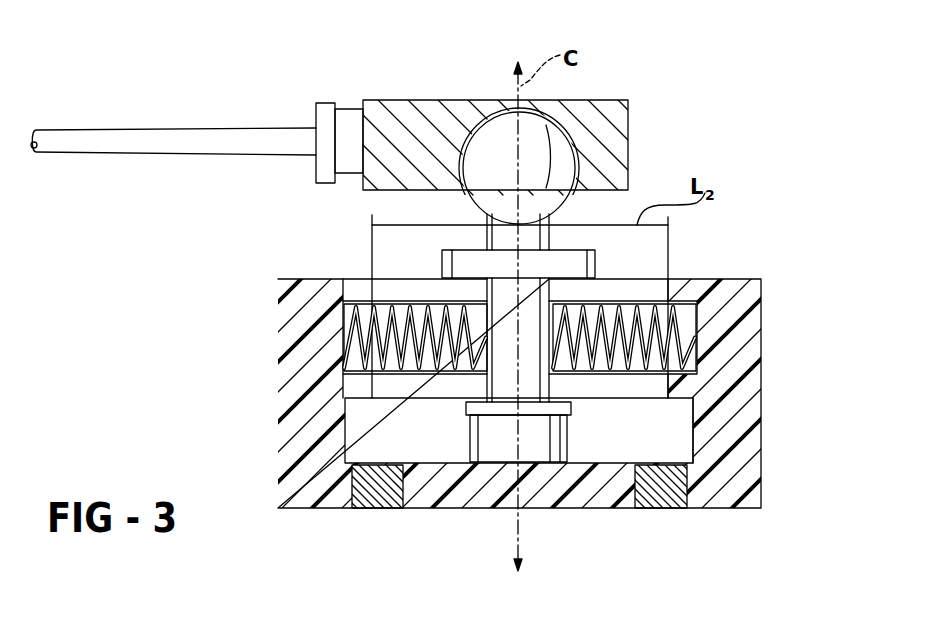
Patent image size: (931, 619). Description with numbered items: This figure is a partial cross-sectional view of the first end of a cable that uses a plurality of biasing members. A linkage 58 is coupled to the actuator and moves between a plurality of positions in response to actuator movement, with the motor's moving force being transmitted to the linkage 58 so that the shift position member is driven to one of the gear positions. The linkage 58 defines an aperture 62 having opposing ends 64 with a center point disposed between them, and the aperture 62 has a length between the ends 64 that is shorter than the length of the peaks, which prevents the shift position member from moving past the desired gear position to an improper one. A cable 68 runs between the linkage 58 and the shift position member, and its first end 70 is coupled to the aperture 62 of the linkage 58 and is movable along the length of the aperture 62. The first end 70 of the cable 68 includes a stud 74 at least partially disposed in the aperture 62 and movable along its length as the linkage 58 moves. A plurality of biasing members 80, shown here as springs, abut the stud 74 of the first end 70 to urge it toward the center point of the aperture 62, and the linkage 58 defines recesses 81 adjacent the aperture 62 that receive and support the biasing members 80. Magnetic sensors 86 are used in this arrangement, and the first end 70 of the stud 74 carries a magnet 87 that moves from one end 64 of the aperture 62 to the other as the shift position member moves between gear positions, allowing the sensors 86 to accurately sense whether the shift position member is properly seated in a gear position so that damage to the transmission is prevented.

The linkage 58 is at (748, 295).
The aperture 62 is at (633, 390).
The ends of the aperture 64 is at (370, 298).
The cable 68 is at (231, 145).
The first end of the cable 70 is at (402, 110).
The stud 74 is at (562, 163).
The biasing members 80 is at (362, 335).
The recesses 81 is at (357, 300).
The magnetic sensors 86 is at (378, 495).
The magnet 87 is at (487, 438).